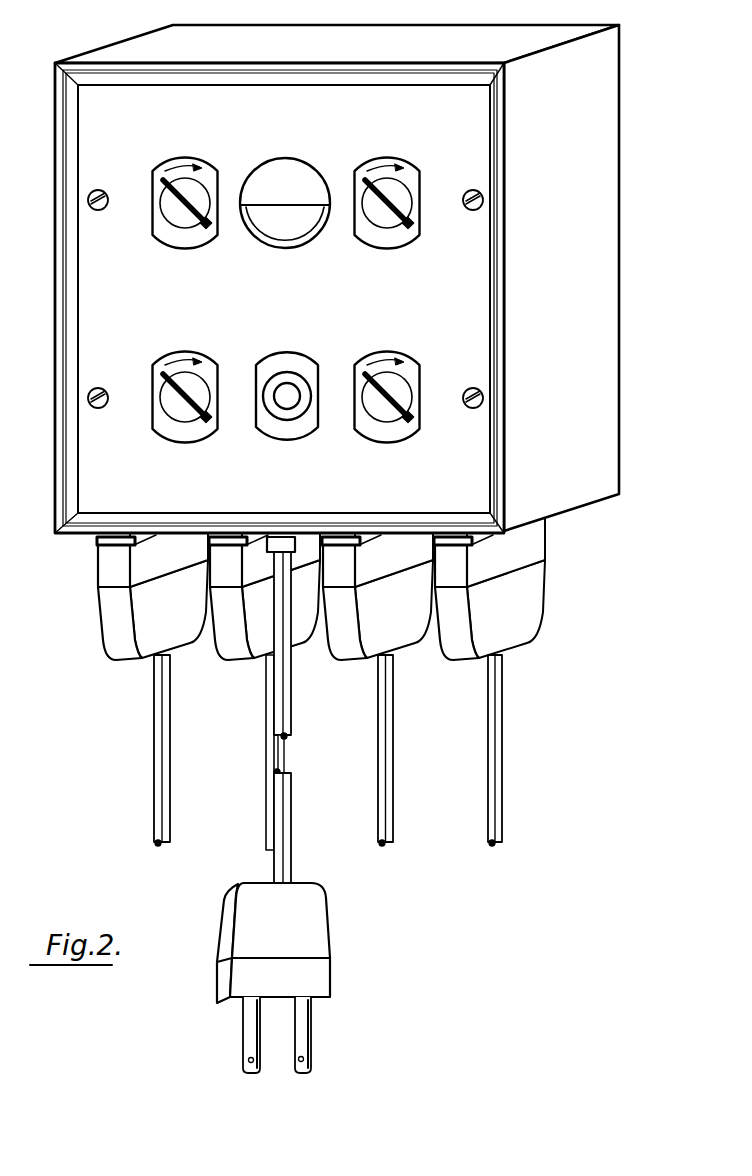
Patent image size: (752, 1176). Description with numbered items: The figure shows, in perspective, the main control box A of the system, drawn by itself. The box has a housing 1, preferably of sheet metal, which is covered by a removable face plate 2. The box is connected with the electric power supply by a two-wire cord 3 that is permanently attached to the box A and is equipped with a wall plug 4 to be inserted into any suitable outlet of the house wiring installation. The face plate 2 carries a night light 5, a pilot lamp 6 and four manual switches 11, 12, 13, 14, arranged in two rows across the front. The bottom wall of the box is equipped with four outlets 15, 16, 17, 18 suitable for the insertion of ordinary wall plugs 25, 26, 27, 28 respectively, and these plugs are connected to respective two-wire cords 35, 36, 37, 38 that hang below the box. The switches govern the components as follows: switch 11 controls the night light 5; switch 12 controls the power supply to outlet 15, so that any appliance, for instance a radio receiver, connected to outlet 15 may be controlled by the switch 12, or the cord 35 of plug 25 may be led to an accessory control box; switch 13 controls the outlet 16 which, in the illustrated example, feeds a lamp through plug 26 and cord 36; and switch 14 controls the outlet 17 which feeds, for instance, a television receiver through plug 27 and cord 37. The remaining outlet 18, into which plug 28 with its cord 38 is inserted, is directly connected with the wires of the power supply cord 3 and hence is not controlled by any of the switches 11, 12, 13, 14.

The housing 1 is at (258, 38).
The main control box A is at (614, 289).
The face plate 2 is at (106, 94).
The two-wire cord 3 is at (288, 710).
The wall plug 4 is at (316, 911).
The night light 5 is at (276, 214).
The pilot lamp 6 is at (295, 392).
The manual switch 11 is at (190, 240).
The manual switch 12 is at (188, 434).
The manual switch 13 is at (410, 182).
The manual switch 14 is at (406, 430).
The outlet 15 is at (98, 540).
The outlet 16 is at (240, 537).
The outlet 17 is at (352, 537).
The outlet 18 is at (455, 537).
The wall plug 25 is at (116, 624).
The wall plug 26 is at (248, 652).
The wall plug 27 is at (356, 652).
The wall plug 28 is at (526, 620).
The two-wire cord 35 is at (160, 790).
The two-wire cord 36 is at (266, 752).
The two-wire cord 37 is at (392, 754).
The two-wire cord 38 is at (498, 750).